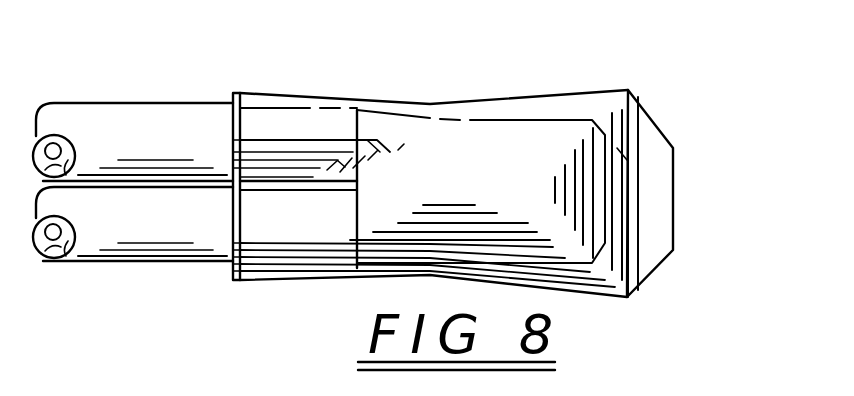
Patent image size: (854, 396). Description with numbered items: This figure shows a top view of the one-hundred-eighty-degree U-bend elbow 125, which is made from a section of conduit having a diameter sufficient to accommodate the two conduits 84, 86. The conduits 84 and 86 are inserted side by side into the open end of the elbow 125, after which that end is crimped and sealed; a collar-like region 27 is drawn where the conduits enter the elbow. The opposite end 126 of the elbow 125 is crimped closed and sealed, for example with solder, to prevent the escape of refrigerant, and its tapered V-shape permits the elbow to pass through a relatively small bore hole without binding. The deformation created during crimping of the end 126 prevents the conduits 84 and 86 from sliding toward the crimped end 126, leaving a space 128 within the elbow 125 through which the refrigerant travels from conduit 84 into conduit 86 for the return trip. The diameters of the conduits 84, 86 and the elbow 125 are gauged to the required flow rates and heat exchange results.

The conduit 84 is at (119, 119).
The conduit 86 is at (117, 231).
The collar 27 is at (234, 94).
The U-bend elbow 125 is at (451, 93).
The space 128 is at (477, 189).
The crimped end 126 is at (673, 198).